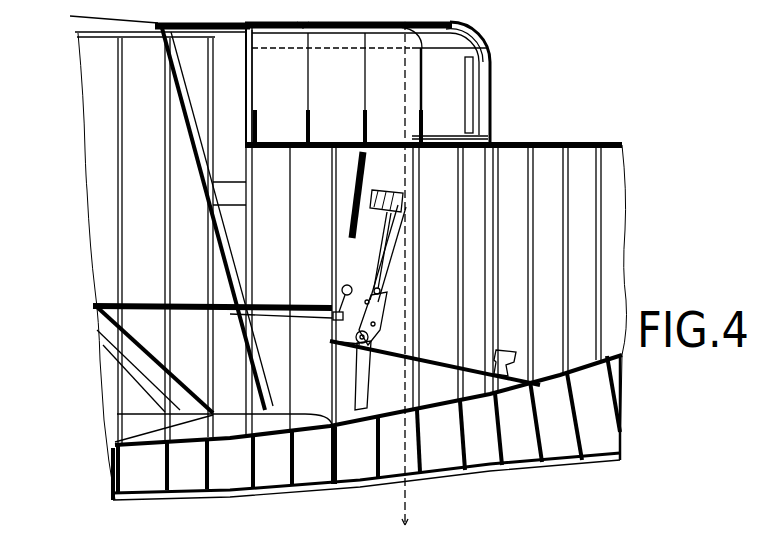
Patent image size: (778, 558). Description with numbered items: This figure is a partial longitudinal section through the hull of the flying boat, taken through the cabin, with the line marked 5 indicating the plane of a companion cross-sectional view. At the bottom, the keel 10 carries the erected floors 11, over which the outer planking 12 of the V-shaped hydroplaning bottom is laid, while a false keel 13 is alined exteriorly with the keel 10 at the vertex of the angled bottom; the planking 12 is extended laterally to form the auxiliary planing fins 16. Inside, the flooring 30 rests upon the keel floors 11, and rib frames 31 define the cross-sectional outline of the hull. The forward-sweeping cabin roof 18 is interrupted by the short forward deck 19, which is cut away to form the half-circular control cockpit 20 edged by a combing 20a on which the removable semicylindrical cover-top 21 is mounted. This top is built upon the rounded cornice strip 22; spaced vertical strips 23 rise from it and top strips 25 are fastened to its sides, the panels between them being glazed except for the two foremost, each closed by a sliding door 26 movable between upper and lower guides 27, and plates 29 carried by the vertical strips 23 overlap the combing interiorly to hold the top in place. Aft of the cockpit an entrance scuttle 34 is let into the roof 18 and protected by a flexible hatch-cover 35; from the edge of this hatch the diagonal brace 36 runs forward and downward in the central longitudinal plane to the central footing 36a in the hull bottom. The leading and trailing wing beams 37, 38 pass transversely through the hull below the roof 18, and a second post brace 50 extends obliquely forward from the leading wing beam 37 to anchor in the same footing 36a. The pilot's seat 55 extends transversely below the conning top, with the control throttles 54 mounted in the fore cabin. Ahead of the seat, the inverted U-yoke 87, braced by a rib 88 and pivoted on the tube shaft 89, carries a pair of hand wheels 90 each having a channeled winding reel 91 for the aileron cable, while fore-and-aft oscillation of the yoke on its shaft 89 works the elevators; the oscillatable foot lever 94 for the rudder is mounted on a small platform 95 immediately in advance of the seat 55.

The section line 5 is at (396, 274).
The keel 10 is at (550, 462).
The floors 11 is at (500, 438).
The outer planking 12 is at (597, 458).
The false keel 13 is at (560, 467).
The auxiliary planing fins 16 is at (144, 241).
The cabin roof 18 is at (185, 40).
The forward deck 19 is at (583, 150).
The control cockpit 20 is at (390, 160).
The combing 20a is at (320, 153).
The cover-top 21 is at (268, 62).
The cornice strip 22 is at (473, 36).
The vertical strips 23 is at (370, 85).
The top strips 25 is at (362, 68).
The sliding door 26 is at (473, 68).
The guides 27 is at (435, 37).
The plates 29 is at (310, 126).
The flooring 30 is at (588, 366).
The rib frames 31 is at (567, 205).
The entrance scuttle 34 is at (78, 32).
The hatch-cover 35 is at (105, 24).
The brace 36 is at (184, 127).
The central footing 36a is at (230, 432).
The leading wing beam 37 is at (213, 200).
The trailing wing beam 38 is at (100, 378).
The second post brace 50 is at (143, 347).
The control throttles 54 is at (343, 288).
The pilot's seat 55 is at (270, 303).
The U-yoke 87 is at (387, 272).
The rib 88 is at (383, 262).
The tube shaft 89 is at (380, 347).
The hand wheels 90 is at (356, 182).
The winding reel 91 is at (370, 205).
The foot lever 94 is at (500, 353).
The platform 95 is at (435, 370).